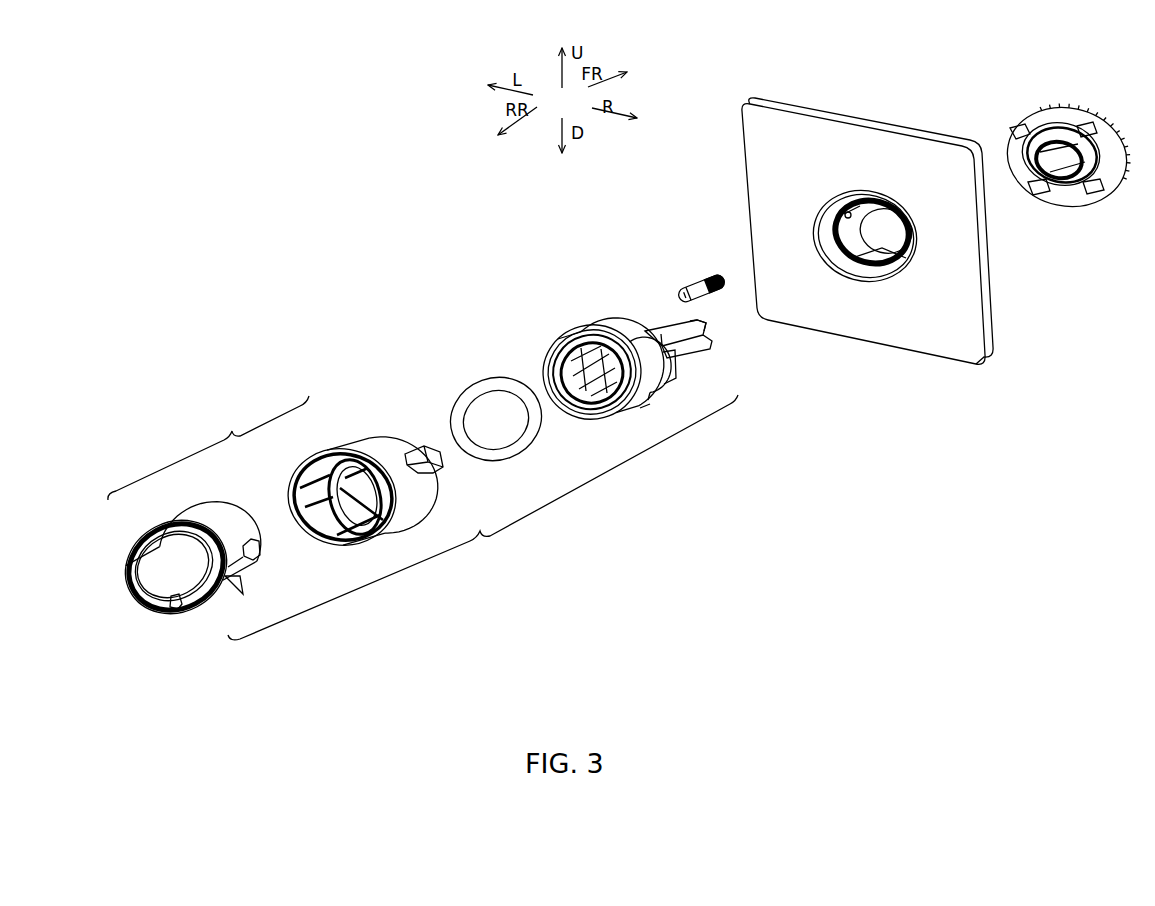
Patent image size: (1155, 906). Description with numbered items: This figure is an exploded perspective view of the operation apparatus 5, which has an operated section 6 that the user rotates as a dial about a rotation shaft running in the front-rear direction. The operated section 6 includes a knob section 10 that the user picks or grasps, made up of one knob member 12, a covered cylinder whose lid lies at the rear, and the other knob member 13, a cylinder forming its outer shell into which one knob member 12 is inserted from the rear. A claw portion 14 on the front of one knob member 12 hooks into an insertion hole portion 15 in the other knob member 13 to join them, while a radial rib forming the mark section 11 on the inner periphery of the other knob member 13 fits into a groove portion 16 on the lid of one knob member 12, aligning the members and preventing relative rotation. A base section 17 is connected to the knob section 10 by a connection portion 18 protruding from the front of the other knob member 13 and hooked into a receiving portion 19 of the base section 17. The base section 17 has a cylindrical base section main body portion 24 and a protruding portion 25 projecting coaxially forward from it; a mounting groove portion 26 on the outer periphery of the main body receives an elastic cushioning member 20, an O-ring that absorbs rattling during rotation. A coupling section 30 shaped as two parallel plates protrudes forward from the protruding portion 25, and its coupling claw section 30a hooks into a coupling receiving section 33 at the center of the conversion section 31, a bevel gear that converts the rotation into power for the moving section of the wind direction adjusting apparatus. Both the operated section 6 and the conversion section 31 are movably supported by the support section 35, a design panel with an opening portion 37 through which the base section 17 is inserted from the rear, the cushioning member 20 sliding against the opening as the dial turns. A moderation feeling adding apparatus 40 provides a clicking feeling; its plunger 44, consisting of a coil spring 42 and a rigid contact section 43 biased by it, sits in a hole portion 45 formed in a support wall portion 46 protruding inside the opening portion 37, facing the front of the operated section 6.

The operation apparatus 5 is at (980, 387).
The operated section 6 is at (483, 517).
The knob section 10 is at (208, 448).
The mark section 11 is at (358, 535).
The one knob member 12 is at (173, 517).
The other knob member 13 is at (335, 445).
The claw portion 14 is at (258, 554).
The insertion hole portion 15 is at (380, 487).
The groove portion 16 is at (175, 609).
The base section 17 is at (638, 362).
The connection portion 18 is at (413, 450).
The receiving portion 19 is at (620, 408).
The cushioning member 20 is at (483, 378).
The base section main body portion 24 is at (577, 332).
The protruding portion 25 is at (672, 374).
The mounting groove portion 26 is at (653, 401).
The coupling section 30 is at (710, 347).
The coupling claw section 30a is at (673, 316).
The conversion section 31 is at (1053, 116).
The coupling receiving section 33 is at (1057, 184).
The support section 35 is at (863, 133).
The opening portion 37 is at (862, 271).
The moderation feeling adding apparatus 40 is at (676, 265).
The spring 42 is at (710, 270).
The contact section 43 is at (688, 290).
The plunger 44 is at (694, 265).
The hole portion 45 is at (843, 213).
The support wall portion 46 is at (848, 243).